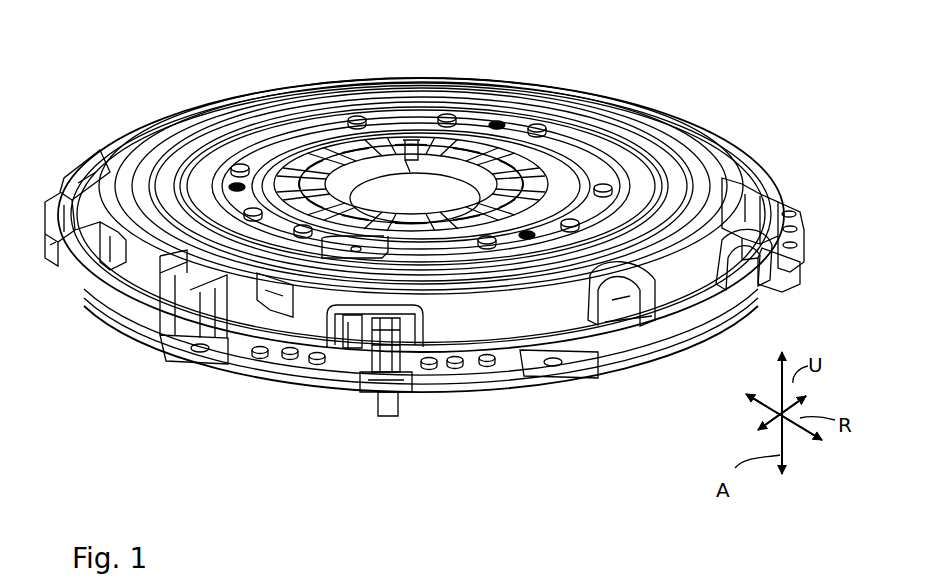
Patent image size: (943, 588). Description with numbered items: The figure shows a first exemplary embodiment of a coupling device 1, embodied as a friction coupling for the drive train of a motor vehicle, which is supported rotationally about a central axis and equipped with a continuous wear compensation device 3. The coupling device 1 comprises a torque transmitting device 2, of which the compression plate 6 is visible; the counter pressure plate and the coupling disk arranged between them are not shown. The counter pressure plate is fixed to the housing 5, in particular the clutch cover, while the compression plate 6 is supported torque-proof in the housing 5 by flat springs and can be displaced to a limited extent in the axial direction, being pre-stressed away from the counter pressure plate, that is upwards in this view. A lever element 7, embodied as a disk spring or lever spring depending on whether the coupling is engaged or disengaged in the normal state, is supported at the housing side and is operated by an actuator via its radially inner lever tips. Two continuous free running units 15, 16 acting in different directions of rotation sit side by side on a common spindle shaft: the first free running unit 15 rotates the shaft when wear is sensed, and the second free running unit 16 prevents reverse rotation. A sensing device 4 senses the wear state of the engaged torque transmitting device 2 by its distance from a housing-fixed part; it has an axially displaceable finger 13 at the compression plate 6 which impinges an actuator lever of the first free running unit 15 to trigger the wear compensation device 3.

The coupling device 1 is at (746, 100).
The torque transmitting device 2 is at (424, 235).
The continuous wear compensation device 3 is at (412, 360).
The sensing device 4 is at (368, 406).
The housing 5 is at (515, 325).
The compression plate 6 is at (443, 387).
The lever element 7 is at (413, 163).
The finger 13 is at (388, 418).
The first free running unit 15 is at (372, 345).
The second free running unit 16 is at (364, 337).